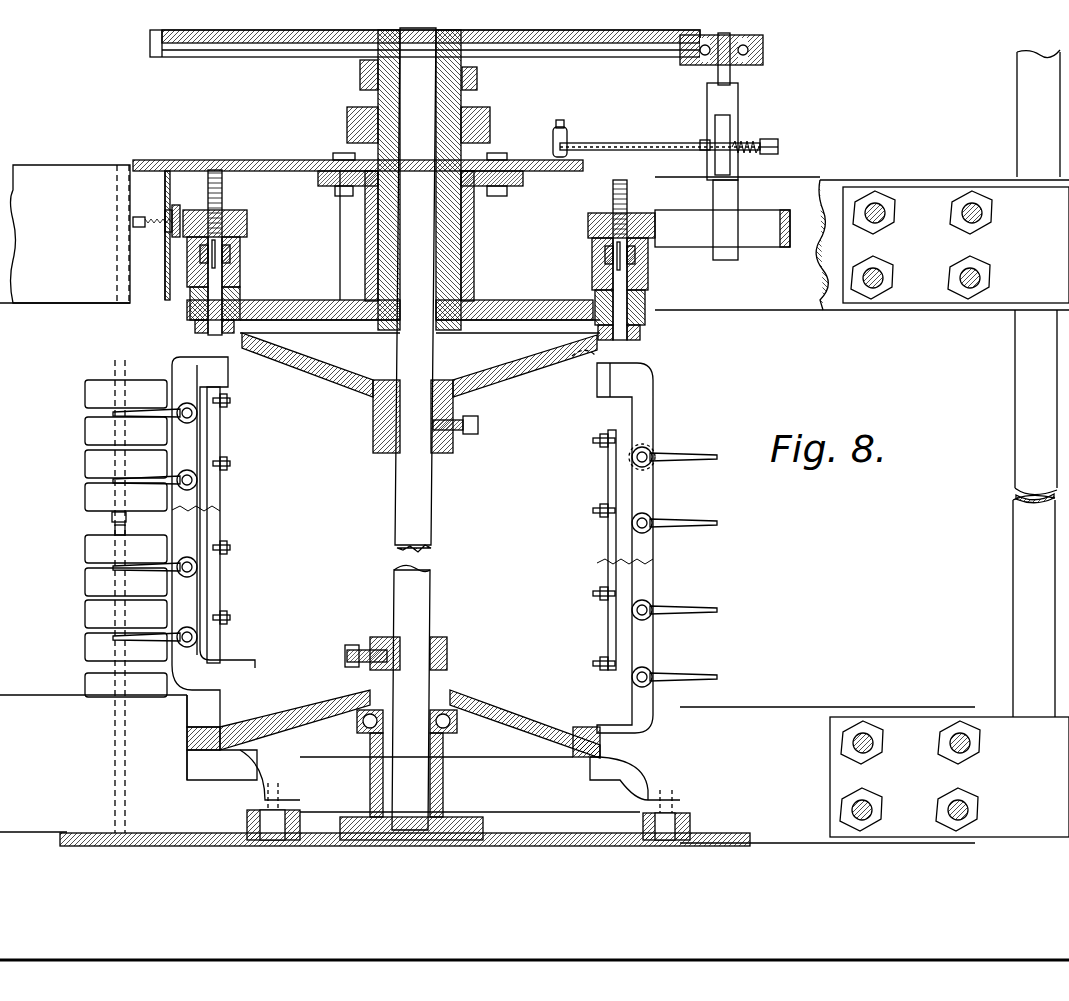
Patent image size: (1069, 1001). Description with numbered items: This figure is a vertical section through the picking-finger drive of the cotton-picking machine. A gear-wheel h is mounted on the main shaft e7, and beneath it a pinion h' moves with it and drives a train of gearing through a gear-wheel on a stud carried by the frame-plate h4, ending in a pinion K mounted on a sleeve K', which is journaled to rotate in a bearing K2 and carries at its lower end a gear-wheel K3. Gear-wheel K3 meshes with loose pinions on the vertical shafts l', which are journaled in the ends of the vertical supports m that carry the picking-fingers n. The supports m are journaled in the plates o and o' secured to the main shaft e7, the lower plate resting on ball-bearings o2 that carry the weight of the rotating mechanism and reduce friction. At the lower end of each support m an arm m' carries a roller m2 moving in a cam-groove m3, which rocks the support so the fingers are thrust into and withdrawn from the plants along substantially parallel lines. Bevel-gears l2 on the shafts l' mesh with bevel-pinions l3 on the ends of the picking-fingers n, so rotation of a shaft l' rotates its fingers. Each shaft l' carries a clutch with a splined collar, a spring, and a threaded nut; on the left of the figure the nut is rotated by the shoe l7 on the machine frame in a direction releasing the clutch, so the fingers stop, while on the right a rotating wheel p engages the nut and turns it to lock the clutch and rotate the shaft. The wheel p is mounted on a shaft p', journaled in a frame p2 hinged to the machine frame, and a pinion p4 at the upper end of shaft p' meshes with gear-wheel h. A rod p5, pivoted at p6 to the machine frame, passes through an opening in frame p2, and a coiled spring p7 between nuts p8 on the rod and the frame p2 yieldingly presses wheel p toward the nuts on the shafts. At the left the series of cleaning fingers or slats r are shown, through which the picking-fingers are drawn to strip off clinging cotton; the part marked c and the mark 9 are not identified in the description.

The gear-wheel h is at (425, 58).
The pinion h' is at (486, 81).
The frame-plate h4 is at (195, 168).
The pinion K is at (436, 125).
The sleeve K' is at (382, 252).
The bearing K2 is at (462, 250).
The gear-wheel K3 is at (450, 338).
The main shaft e7 is at (414, 429).
The vertical shaft l' is at (414, 493).
The bevel-gear l2 is at (230, 402).
The bevel-pinion l3 is at (655, 440).
The shoe l7 is at (165, 215).
The vertical support m is at (431, 547).
The arm m' is at (456, 774).
The roller m2 is at (280, 825).
The cam-groove m3 is at (245, 820).
The picking-finger n is at (157, 480).
The lower plate o is at (393, 697).
The upper plate o' is at (419, 375).
The ball-bearing o2 is at (360, 733).
The rotating wheel p is at (737, 243).
The shaft p' is at (750, 71).
The hinged frame p2 is at (740, 107).
The pinion p4 is at (765, 60).
The rod p5 is at (643, 143).
The pivot p6 is at (570, 135).
The coiled spring p7 is at (770, 158).
The nuts p8 is at (770, 143).
The cleaning fingers r is at (126, 538).
The bar c is at (107, 535).
The collar 9 is at (708, 137).